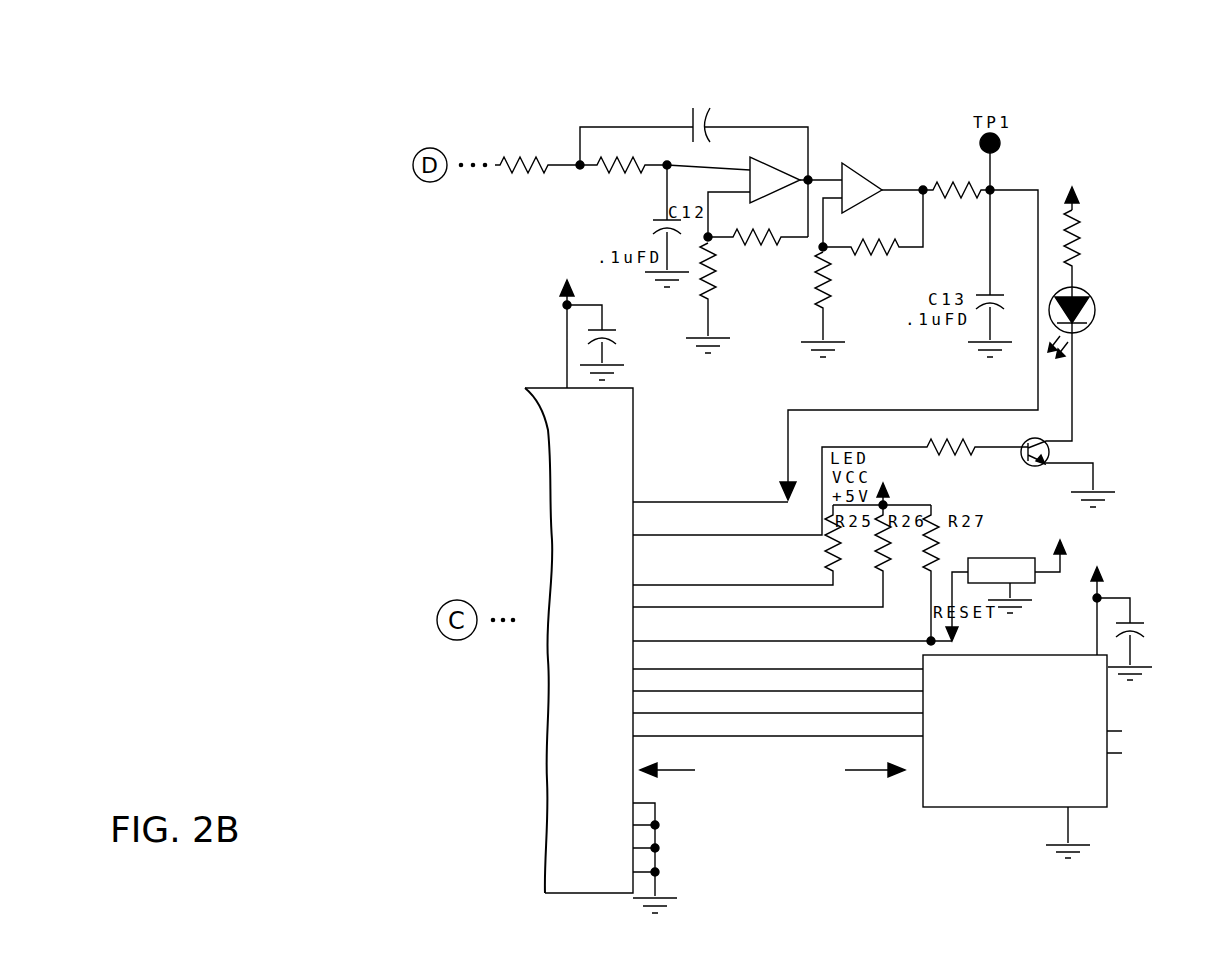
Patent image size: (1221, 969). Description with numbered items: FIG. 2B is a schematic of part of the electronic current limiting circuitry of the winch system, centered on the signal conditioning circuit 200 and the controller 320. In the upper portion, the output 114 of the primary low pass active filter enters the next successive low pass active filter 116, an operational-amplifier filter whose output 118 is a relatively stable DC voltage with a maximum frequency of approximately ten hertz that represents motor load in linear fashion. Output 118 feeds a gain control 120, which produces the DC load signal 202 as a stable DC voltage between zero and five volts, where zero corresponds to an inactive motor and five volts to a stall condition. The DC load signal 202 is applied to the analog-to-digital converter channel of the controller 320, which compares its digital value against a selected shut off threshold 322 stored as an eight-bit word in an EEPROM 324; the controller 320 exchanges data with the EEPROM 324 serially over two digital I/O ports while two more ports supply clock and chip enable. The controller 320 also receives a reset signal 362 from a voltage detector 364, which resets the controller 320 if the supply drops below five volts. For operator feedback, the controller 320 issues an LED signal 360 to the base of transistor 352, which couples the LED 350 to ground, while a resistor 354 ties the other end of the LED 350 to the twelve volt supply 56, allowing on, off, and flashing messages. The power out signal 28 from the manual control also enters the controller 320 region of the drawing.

The signal conditioning circuit 200 is at (796, 55).
The low pass active filter 116 is at (773, 97).
The output 114 is at (500, 167).
The output 118 is at (815, 180).
The gain control 120 is at (860, 178).
The DC load signal 202 is at (1006, 188).
The 12 volt supply 56 is at (1077, 201).
The resistor 354 is at (1080, 214).
The LED 350 is at (1086, 293).
The transistor 352 is at (1028, 442).
The LED signal 360 is at (862, 447).
The reset signal 362 is at (931, 585).
The voltage detector 364 is at (1008, 558).
The controller 320 is at (633, 452).
The power out signal 28 is at (613, 315).
The shut off threshold 322 is at (850, 773).
The EEPROM 324 is at (1107, 775).